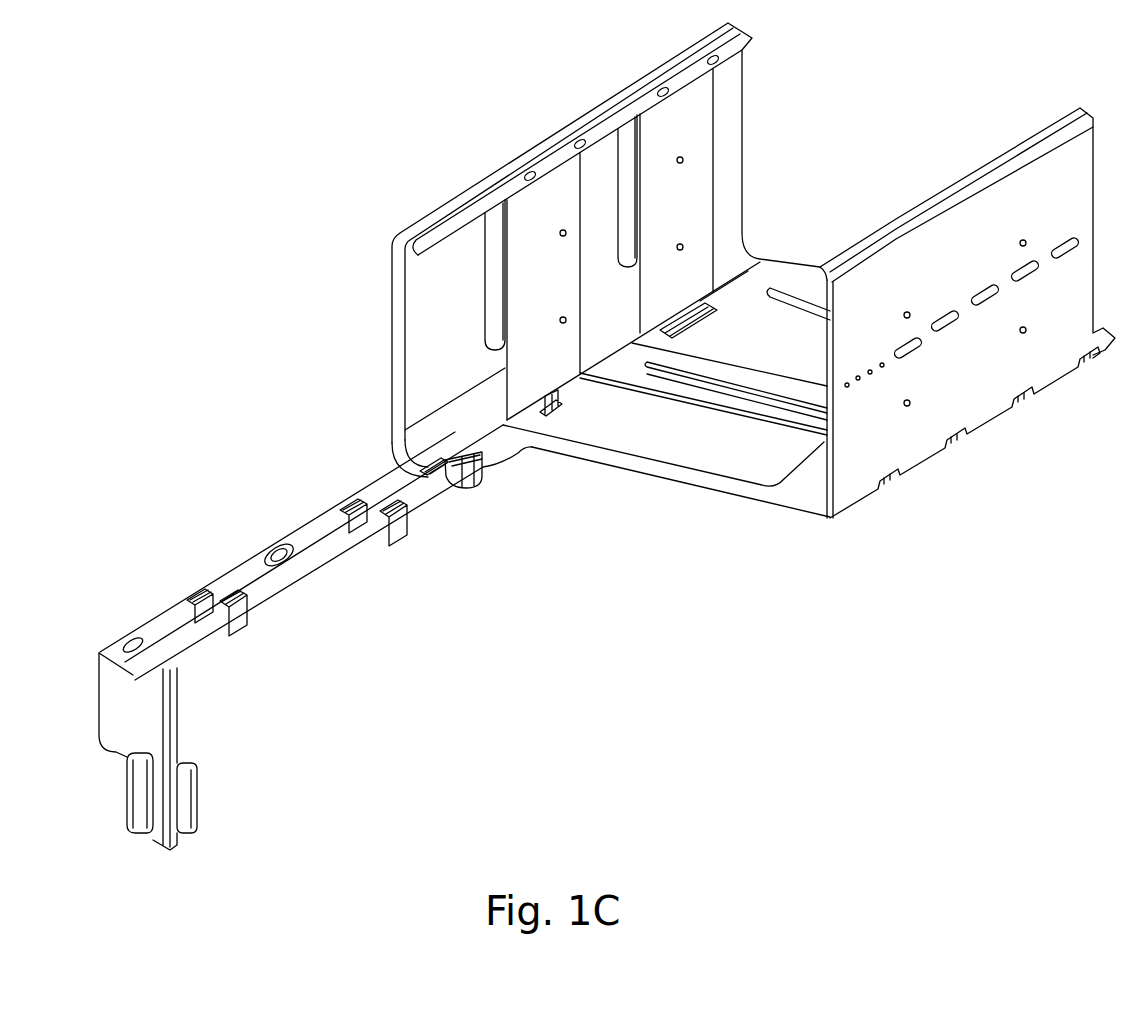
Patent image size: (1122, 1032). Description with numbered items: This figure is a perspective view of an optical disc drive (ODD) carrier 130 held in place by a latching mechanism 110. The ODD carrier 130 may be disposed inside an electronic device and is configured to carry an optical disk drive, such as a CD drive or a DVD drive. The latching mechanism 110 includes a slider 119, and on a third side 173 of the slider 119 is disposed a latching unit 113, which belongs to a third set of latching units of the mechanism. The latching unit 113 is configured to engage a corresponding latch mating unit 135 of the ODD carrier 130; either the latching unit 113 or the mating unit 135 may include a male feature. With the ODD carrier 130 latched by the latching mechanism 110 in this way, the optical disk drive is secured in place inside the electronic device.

The optical disc drive carrier 130 is at (662, 495).
The latching mechanism 110 is at (310, 587).
The slider 119 is at (258, 562).
The third side 173 is at (418, 467).
The latch mating unit 135 is at (480, 452).
The latching unit 113 is at (473, 463).